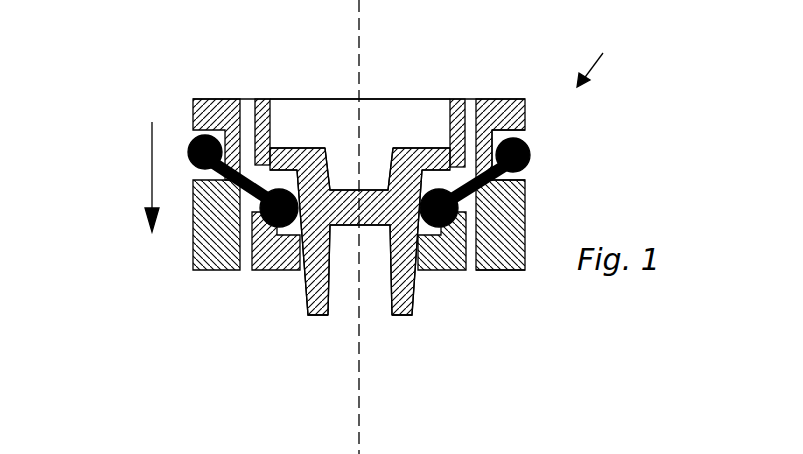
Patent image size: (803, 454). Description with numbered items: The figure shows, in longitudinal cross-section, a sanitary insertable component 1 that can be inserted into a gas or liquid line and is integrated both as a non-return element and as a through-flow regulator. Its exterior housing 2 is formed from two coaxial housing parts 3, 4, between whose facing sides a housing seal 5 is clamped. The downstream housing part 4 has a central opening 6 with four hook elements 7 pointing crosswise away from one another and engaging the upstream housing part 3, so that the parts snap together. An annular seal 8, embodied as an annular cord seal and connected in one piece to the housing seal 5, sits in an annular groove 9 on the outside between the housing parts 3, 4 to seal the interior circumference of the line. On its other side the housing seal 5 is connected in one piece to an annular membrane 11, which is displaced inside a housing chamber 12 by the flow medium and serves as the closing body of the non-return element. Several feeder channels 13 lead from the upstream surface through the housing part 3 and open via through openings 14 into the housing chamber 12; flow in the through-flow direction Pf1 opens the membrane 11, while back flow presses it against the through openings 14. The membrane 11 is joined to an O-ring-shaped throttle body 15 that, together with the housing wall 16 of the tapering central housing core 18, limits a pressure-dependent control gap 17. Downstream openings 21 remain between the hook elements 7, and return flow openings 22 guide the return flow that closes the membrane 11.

The insertable component 1 is at (597, 56).
The exterior housing 2 is at (532, 214).
The upstream housing part 3 is at (505, 122).
The downstream housing part 4 is at (507, 273).
The housing seal 5 is at (530, 190).
The central opening 6 is at (305, 300).
The hook elements 7 is at (318, 318).
The annular seal 8 is at (537, 138).
The annular groove 9 is at (528, 127).
The annular membrane 11 is at (441, 130).
The housing chamber 12 is at (403, 152).
The feeder channels 13 is at (262, 130).
The through openings 14 is at (290, 147).
The throttle body 15 is at (274, 250).
The housing wall 16 is at (336, 174).
The control gap 17 is at (360, 270).
The central housing core 18 is at (378, 206).
The downstream openings 21 is at (400, 262).
The return flow openings 22 is at (473, 278).
The through-flow direction Pf1 is at (150, 172).